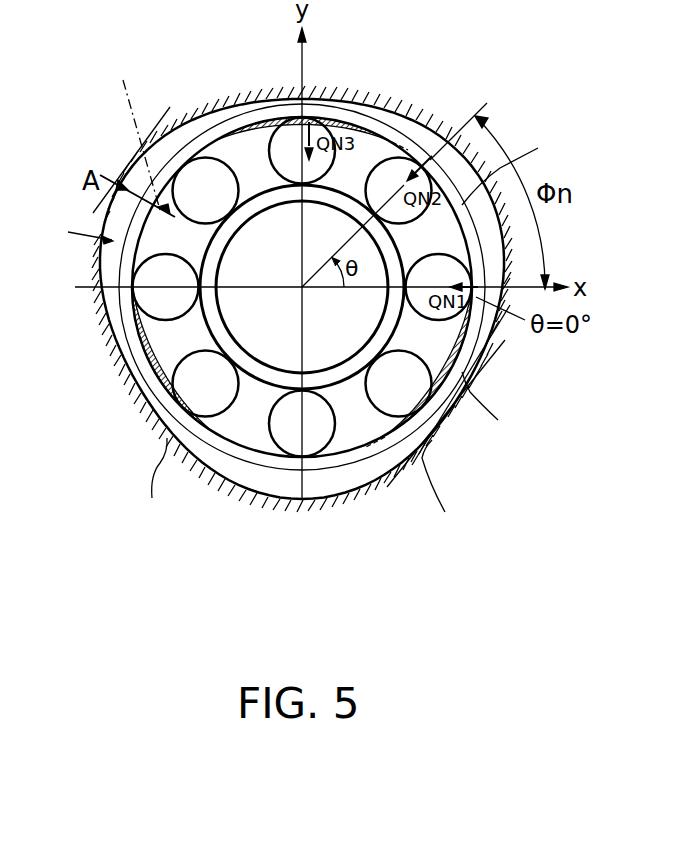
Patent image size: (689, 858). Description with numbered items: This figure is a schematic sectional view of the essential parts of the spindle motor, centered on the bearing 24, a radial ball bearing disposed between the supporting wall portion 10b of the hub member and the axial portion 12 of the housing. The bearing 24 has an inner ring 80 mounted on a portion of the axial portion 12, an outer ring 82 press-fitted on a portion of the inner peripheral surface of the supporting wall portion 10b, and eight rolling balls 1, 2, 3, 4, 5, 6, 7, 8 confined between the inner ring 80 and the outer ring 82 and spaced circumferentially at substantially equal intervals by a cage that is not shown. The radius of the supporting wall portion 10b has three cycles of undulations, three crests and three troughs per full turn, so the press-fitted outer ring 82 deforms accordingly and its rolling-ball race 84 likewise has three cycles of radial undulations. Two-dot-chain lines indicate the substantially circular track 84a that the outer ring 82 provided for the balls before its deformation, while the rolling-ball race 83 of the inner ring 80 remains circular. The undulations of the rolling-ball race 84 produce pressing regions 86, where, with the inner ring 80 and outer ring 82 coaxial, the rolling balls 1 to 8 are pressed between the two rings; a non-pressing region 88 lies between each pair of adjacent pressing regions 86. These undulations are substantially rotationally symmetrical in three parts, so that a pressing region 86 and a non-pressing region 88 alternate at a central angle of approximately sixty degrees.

The rolling ball 1 is at (439, 287).
The rolling ball 2 is at (399, 191).
The rolling ball 3 is at (302, 151).
The rolling ball 4 is at (206, 191).
The rolling ball 5 is at (166, 287).
The rolling ball 6 is at (206, 384).
The rolling ball 7 is at (302, 424).
The rolling ball 8 is at (399, 384).
The supporting wall portion 10b is at (153, 487).
The axial portion 12 is at (337, 362).
The bearing 24 is at (437, 427).
The inner ring 80 is at (500, 403).
The outer ring 82 is at (452, 487).
The rolling-ball race of the inner ring 83 is at (517, 166).
The rolling-ball race 84 is at (72, 228).
The substantially circular track 84a is at (129, 131).
The pressing region 86 is at (357, 124).
The non-pressing region 88 is at (174, 147).